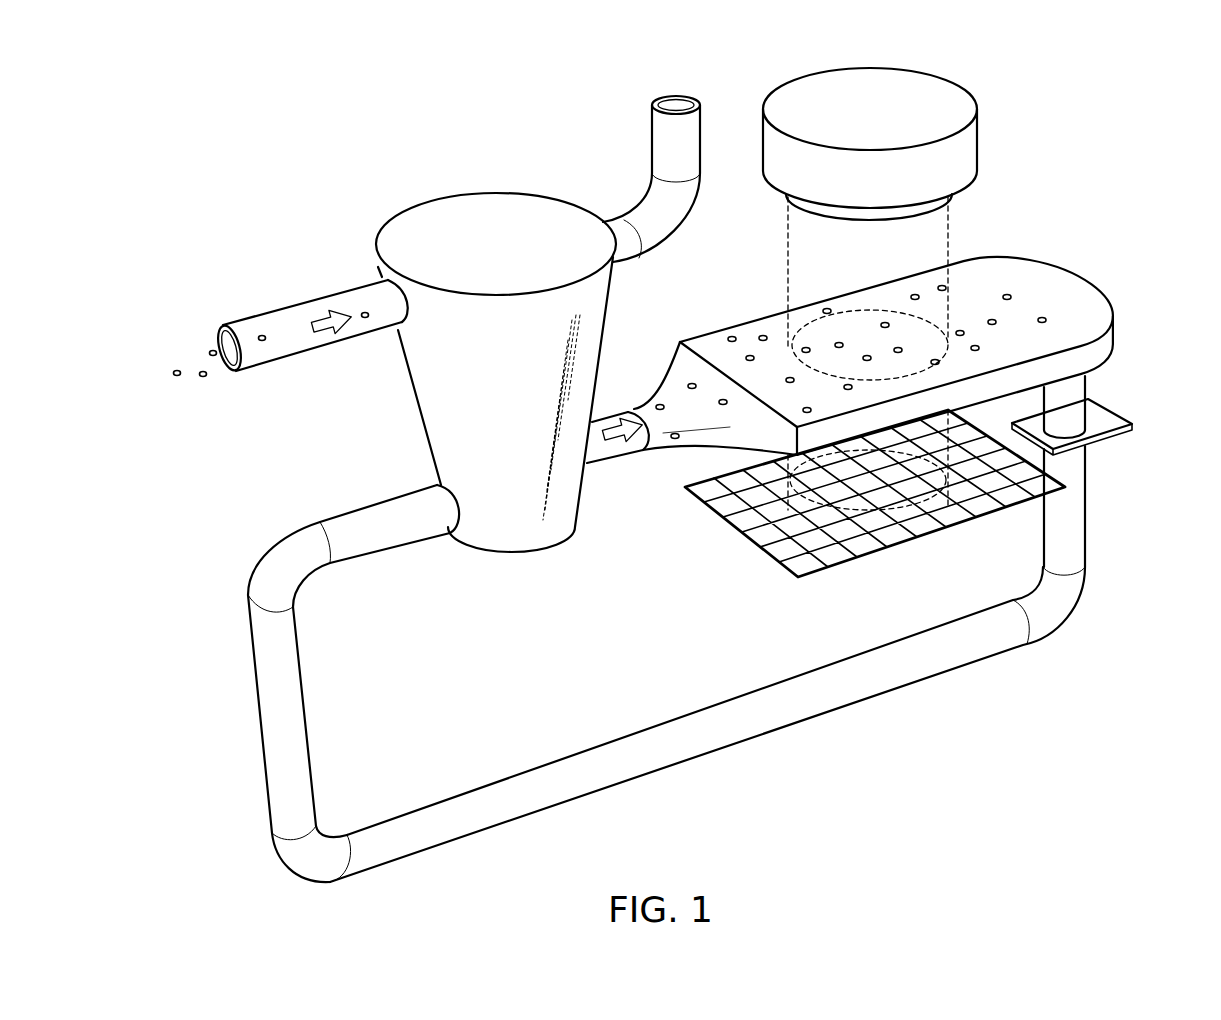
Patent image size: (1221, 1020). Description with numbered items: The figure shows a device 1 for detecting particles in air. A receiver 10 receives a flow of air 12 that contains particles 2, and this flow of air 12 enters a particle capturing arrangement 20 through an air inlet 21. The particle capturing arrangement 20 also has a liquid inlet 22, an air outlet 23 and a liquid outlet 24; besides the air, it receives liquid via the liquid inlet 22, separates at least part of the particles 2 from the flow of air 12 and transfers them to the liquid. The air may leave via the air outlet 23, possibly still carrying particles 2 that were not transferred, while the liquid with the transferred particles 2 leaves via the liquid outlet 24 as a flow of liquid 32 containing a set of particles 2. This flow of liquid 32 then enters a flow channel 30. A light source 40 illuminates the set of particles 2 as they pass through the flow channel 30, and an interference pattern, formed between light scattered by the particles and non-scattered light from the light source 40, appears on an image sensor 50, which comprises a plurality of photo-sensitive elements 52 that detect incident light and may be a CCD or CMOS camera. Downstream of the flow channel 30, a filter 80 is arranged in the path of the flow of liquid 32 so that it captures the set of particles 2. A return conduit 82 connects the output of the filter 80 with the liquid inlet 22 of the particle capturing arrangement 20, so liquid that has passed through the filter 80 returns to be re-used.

The device 1 is at (1065, 71).
The particles 2 is at (205, 380).
The receiver 10 is at (222, 323).
The flow of air 12 is at (322, 333).
The particle capturing arrangement 20 is at (492, 161).
The air inlet 21 is at (368, 293).
The liquid inlet 22 is at (372, 562).
The air outlet 23 is at (656, 148).
The liquid outlet 24 is at (627, 445).
The flow channel 30 is at (703, 332).
The flow of liquid 32 is at (613, 433).
The light source 40 is at (828, 98).
The image sensor 50 is at (968, 538).
The photo-sensitive elements 52 is at (747, 520).
The filter 80 is at (1103, 420).
The return conduit 82 is at (915, 660).